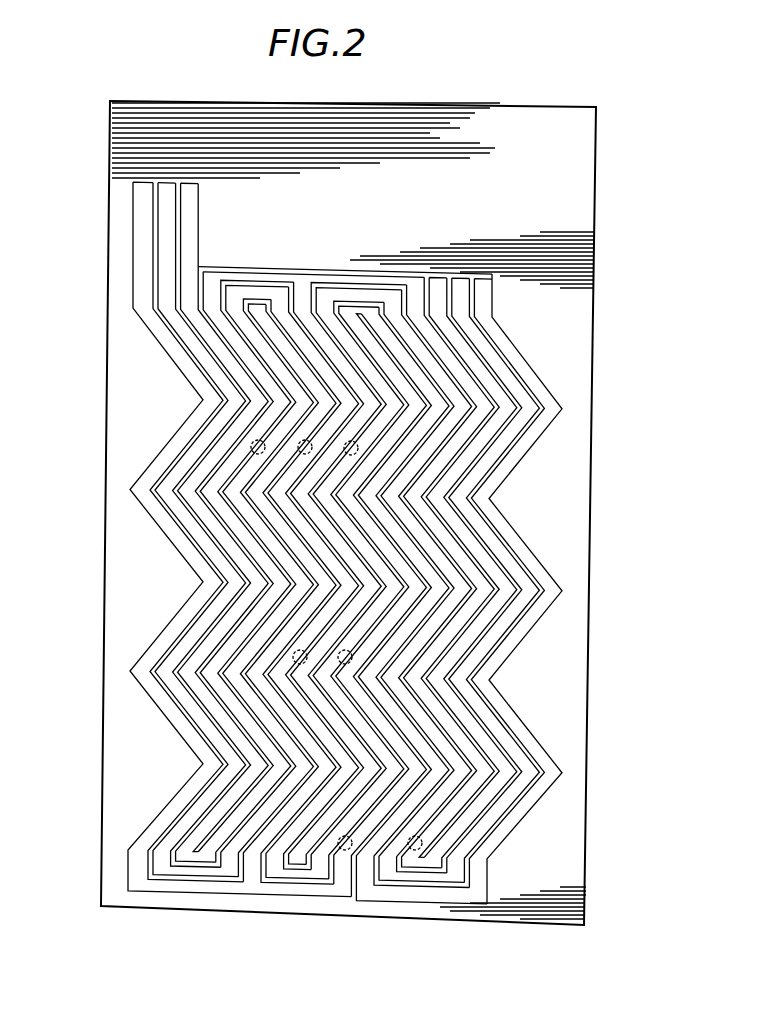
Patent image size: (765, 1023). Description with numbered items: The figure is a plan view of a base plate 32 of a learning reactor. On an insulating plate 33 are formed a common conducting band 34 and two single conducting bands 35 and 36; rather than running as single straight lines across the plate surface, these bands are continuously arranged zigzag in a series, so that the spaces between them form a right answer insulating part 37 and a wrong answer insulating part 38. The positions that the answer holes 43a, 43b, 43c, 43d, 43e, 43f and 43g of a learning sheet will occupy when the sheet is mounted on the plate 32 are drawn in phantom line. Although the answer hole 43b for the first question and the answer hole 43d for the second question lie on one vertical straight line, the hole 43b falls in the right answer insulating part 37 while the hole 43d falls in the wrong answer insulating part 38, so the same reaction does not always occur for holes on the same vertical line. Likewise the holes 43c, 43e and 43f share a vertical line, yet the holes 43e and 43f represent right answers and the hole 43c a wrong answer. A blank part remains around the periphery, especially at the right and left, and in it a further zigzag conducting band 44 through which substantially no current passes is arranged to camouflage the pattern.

The base plate 32 is at (594, 279).
The insulating plate 33 is at (580, 168).
The common conducting band 34 is at (172, 320).
The single conducting band 35 is at (142, 225).
The single conducting band 36 is at (190, 252).
The right answer insulating part 37 is at (156, 183).
The wrong answer insulating part 38 is at (176, 183).
The answer hole 43a is at (251, 446).
The answer hole 43b is at (299, 444).
The answer hole 43c is at (358, 450).
The answer hole 43d is at (294, 655).
The answer hole 43e is at (339, 654).
The answer hole 43f is at (347, 850).
The answer hole 43g is at (416, 850).
The zigzag conducting band 44 is at (488, 705).